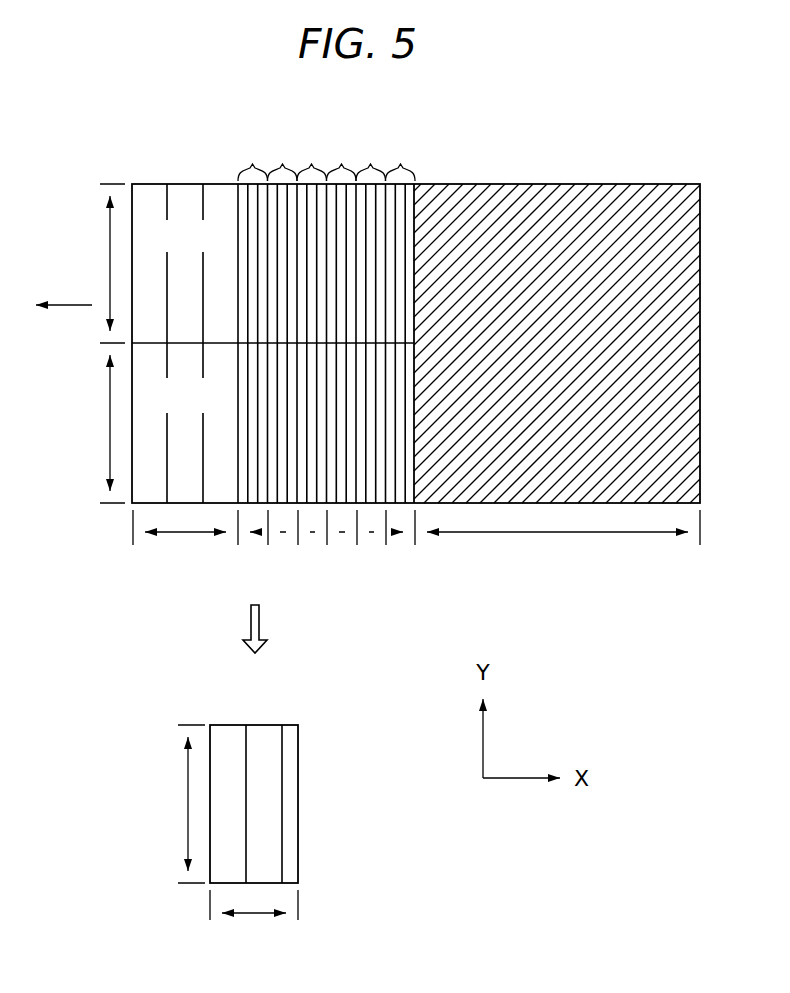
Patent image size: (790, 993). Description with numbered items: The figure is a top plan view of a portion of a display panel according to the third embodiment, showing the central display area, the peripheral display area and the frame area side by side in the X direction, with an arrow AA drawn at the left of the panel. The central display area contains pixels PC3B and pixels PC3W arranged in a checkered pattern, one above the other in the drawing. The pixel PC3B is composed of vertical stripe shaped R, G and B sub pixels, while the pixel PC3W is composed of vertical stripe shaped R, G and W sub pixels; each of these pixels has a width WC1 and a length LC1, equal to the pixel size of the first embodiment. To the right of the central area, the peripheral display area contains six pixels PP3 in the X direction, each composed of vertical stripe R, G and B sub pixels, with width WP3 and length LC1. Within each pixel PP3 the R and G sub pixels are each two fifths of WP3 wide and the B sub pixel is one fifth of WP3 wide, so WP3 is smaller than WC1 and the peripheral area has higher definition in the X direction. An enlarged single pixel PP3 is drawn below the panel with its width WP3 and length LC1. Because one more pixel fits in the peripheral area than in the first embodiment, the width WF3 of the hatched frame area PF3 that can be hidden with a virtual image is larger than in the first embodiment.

The pixel (second pixel) PP3 is at (252, 164).
The frame area PF3 is at (546, 190).
The pixel (first pixel) PC3B is at (184, 263).
The pixel PC3W is at (186, 423).
The direction indication arrow AA is at (64, 292).
The length LC1 is at (140, 533).
The width WC1 is at (185, 551).
The width WP3 is at (400, 538).
The width WF3 is at (557, 551).